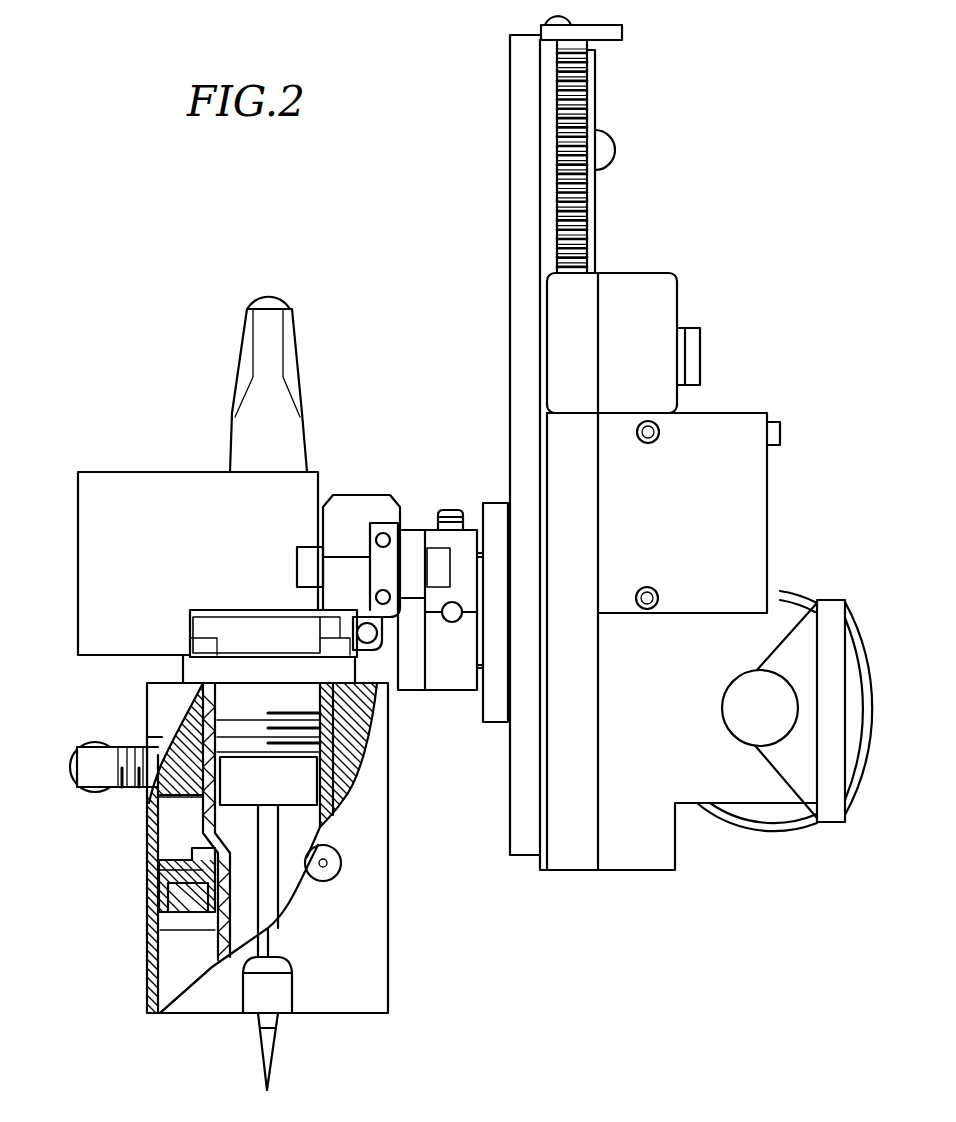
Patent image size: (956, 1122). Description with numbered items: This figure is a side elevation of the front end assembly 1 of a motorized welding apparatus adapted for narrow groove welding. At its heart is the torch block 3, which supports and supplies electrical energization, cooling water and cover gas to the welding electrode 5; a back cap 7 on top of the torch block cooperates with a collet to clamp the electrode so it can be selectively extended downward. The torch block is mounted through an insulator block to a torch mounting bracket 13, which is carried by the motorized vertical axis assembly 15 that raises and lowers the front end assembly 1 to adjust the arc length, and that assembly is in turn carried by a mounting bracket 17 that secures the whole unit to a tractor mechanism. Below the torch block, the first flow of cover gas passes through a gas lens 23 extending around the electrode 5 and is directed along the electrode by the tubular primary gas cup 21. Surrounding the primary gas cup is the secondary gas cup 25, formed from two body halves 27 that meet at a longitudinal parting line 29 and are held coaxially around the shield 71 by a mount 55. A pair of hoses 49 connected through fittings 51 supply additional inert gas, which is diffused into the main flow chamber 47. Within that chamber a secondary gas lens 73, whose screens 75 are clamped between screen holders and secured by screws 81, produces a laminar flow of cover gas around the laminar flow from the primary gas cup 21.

The front end assembly 1 is at (381, 241).
The torch block 3 is at (105, 483).
The welding electrode 5 is at (273, 1022).
The back cap 7 is at (242, 437).
The torch mounting bracket 13 is at (342, 500).
The motorized vertical axis assembly 15 is at (647, 283).
The mounting bracket 17 is at (832, 610).
The primary gas cup 21 is at (212, 967).
The gas lens 23 is at (302, 785).
The secondary gas cup 25 is at (128, 862).
The body halves 27 is at (152, 930).
The parting line 29 is at (268, 943).
The main flow chamber 47 is at (173, 812).
The hoses 49 is at (73, 765).
The fittings 51 is at (137, 750).
The mount 55 is at (190, 663).
The shield 71 is at (298, 698).
The secondary gas lens 73 is at (188, 933).
The screens 75 is at (162, 893).
The screws 81 is at (338, 867).